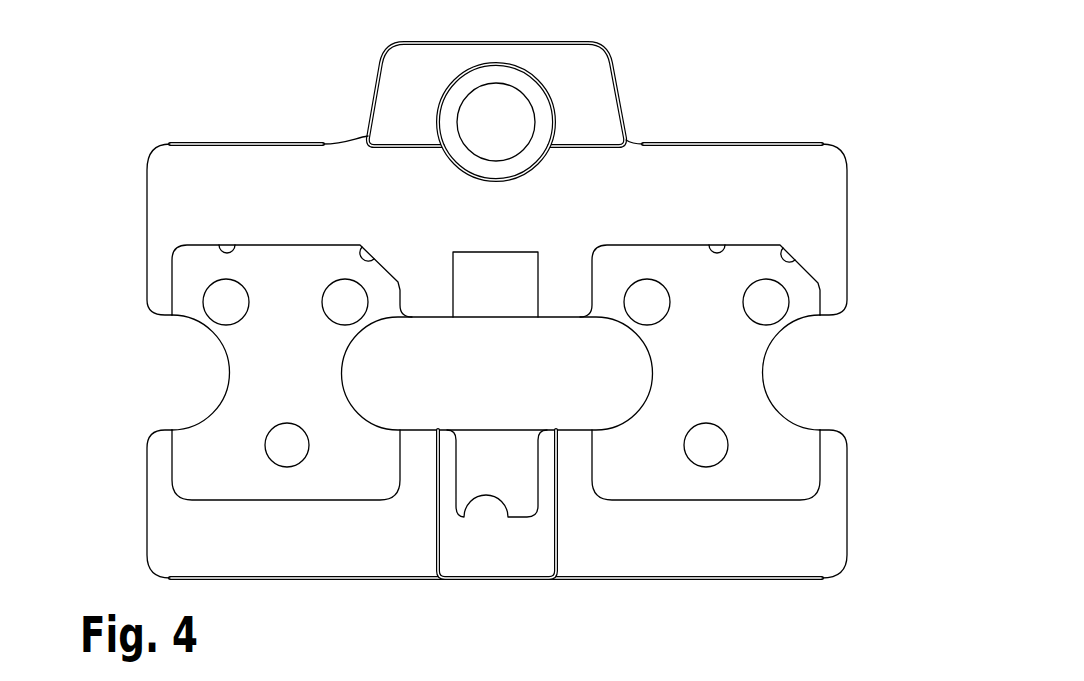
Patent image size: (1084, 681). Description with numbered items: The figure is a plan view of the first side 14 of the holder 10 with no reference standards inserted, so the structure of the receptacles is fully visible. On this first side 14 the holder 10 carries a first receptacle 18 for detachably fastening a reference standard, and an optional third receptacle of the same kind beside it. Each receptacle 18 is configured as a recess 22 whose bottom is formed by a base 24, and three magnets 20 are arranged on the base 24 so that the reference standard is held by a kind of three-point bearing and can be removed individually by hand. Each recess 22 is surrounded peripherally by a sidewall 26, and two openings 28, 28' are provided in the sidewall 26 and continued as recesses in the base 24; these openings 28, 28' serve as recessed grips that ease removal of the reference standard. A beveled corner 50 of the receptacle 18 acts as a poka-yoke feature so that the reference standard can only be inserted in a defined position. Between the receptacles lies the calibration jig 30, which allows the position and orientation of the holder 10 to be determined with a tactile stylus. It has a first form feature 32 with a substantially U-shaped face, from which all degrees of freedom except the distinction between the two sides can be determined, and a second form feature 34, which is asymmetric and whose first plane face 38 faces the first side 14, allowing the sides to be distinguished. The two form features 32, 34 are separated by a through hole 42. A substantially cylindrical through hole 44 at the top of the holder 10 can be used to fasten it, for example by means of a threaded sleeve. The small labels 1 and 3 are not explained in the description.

The holder 10 is at (837, 86).
The first side 14 is at (273, 163).
The first receptacle 18 is at (445, 315).
The first magnets 20 is at (285, 373).
The recess 22 is at (228, 479).
The base 24 is at (147, 372).
The sidewall 26 is at (228, 208).
The opening 28 is at (293, 374).
The opening 28' is at (704, 374).
The calibration jig 30 is at (549, 365).
The first form feature 32 is at (463, 513).
The second form feature 34 is at (527, 278).
The first plane face 38 is at (483, 272).
The through hole 42 is at (482, 393).
The cylindrical through hole 44 is at (515, 108).
The beveled corner 50 is at (371, 253).
The first side 1 is at (462, 233).
The second side 3 is at (529, 233).